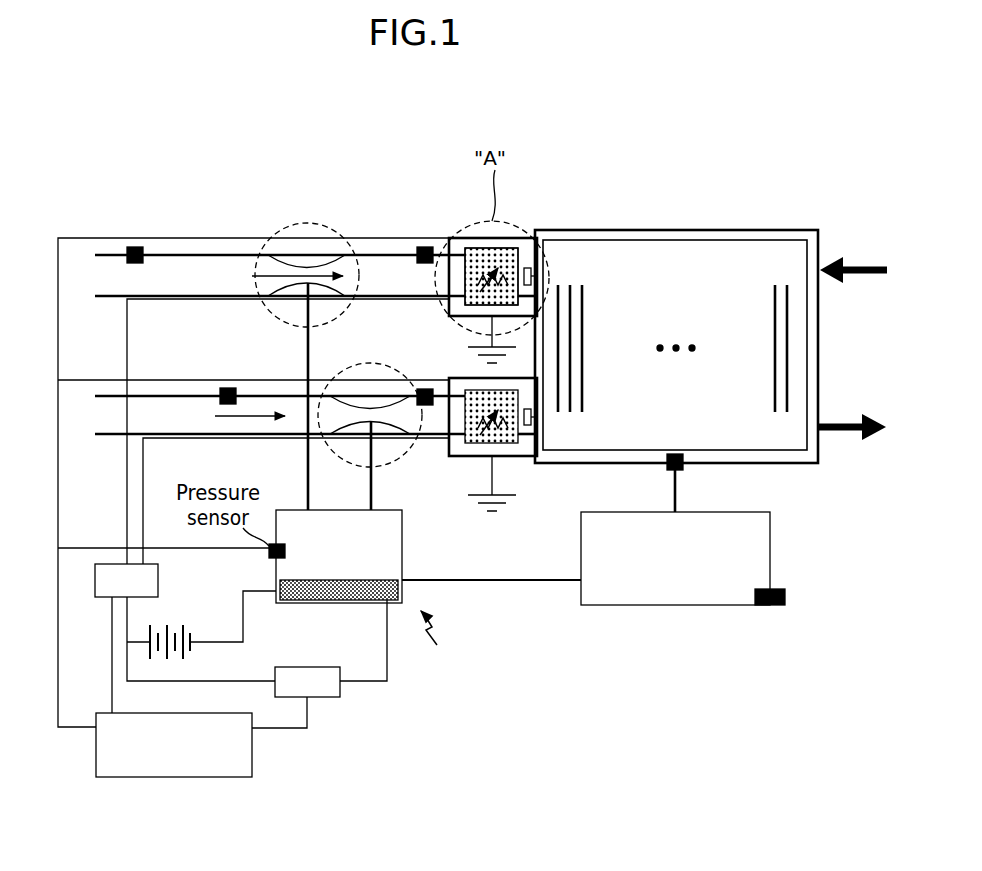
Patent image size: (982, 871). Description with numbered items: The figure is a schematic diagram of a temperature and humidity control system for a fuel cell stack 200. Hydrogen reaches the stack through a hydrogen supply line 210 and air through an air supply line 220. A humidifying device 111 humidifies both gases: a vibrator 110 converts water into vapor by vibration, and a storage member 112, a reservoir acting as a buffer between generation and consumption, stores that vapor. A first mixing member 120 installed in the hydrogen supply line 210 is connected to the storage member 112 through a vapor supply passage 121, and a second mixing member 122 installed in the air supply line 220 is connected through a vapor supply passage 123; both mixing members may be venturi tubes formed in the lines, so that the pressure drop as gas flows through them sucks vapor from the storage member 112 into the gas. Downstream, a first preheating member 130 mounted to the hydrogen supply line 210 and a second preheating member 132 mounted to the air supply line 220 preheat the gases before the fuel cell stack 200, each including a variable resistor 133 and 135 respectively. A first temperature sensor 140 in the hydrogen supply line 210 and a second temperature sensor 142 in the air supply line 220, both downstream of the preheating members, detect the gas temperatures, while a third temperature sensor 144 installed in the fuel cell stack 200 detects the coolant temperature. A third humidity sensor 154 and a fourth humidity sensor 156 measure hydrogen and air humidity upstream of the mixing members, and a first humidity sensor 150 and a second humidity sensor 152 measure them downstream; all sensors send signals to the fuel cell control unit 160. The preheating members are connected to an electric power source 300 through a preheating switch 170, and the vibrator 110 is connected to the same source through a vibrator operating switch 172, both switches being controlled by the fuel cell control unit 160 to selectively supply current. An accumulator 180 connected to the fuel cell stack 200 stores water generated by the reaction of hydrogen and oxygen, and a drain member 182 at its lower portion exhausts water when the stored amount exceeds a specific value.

The vibrator 110 is at (400, 592).
The humidifying device 111 is at (440, 639).
The storage member 112 is at (403, 552).
The first mixing member 120 is at (375, 363).
The vapor supply passage 121 is at (373, 492).
The second mixing member 122 is at (306, 222).
The vapor supply passage 123 is at (310, 344).
The first preheating member 130 is at (472, 437).
The second preheating member 132 is at (500, 250).
The variable resistor 133 is at (505, 442).
The variable resistor 135 is at (480, 272).
The first temperature sensor 140 is at (530, 458).
The second temperature sensor 142 is at (528, 267).
The third temperature sensor 144 is at (688, 470).
The first humidity sensor 150 is at (425, 389).
The second humidity sensor 152 is at (425, 247).
The third humidity sensor 154 is at (228, 388).
The fourth humidity sensor 156 is at (135, 247).
The fuel cell control unit 160 is at (177, 778).
The preheating switch 170 is at (159, 578).
The vibrator operating switch 172 is at (340, 697).
The accumulator 180 is at (772, 539).
The drain member 182 is at (787, 597).
The fuel cell stack 200 is at (676, 229).
The hydrogen supply line 210 is at (170, 394).
The air supply line 220 is at (205, 254).
The electric power source 300 is at (183, 628).